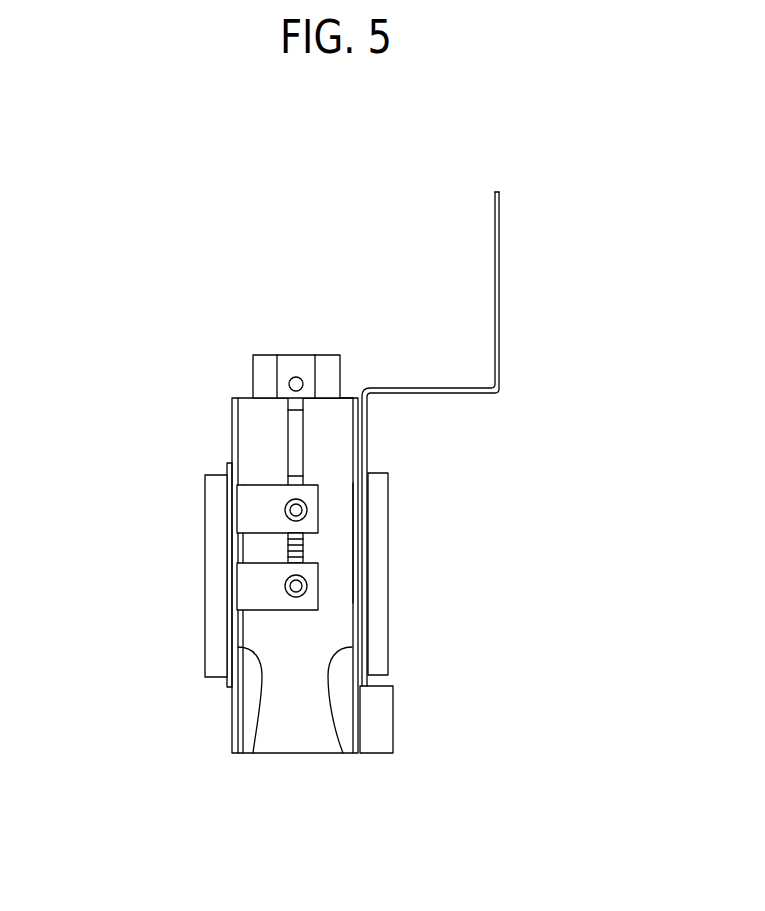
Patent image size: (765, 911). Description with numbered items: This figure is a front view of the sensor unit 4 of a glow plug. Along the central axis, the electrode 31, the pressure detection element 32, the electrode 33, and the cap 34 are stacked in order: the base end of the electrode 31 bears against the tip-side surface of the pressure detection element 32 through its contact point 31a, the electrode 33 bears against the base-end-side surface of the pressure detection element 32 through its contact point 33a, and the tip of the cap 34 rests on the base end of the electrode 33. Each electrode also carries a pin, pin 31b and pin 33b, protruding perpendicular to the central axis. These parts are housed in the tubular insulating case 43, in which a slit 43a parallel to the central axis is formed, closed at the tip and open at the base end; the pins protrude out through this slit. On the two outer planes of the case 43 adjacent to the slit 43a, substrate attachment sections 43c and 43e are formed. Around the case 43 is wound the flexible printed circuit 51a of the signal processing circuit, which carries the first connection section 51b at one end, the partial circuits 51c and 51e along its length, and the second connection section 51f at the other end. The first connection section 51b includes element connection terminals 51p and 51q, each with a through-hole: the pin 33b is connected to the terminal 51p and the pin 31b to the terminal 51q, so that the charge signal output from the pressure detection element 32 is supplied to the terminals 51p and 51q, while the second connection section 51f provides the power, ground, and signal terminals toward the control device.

The sensor unit 4 is at (550, 188).
The electrode 31 is at (280, 599).
The contact point 31a is at (290, 561).
The pin 31b is at (286, 590).
The pressure detection element 32 is at (288, 548).
The electrode 33 is at (280, 497).
The contact point 33a is at (283, 532).
The pin 33b is at (285, 510).
The cap 34 is at (293, 355).
The case 43 is at (349, 644).
The slit 43a is at (303, 430).
The substrate attachment section 43c is at (253, 753).
The substrate attachment section 43e is at (343, 753).
The flexible printed circuit 51a is at (231, 722).
The first connection section 51b is at (480, 483).
The partial circuit 51c is at (205, 666).
The partial circuit 51e is at (390, 643).
The second connection section 51f is at (500, 288).
The element connection terminal 51p is at (307, 510).
The element connection terminal 51q is at (307, 586).